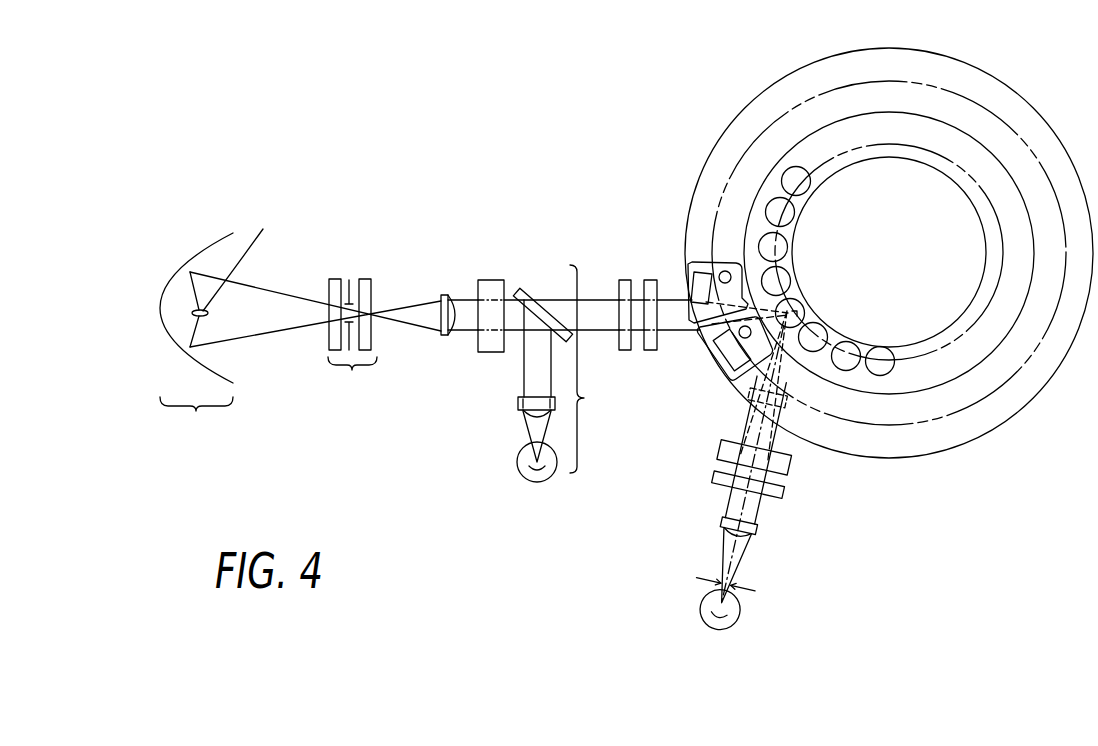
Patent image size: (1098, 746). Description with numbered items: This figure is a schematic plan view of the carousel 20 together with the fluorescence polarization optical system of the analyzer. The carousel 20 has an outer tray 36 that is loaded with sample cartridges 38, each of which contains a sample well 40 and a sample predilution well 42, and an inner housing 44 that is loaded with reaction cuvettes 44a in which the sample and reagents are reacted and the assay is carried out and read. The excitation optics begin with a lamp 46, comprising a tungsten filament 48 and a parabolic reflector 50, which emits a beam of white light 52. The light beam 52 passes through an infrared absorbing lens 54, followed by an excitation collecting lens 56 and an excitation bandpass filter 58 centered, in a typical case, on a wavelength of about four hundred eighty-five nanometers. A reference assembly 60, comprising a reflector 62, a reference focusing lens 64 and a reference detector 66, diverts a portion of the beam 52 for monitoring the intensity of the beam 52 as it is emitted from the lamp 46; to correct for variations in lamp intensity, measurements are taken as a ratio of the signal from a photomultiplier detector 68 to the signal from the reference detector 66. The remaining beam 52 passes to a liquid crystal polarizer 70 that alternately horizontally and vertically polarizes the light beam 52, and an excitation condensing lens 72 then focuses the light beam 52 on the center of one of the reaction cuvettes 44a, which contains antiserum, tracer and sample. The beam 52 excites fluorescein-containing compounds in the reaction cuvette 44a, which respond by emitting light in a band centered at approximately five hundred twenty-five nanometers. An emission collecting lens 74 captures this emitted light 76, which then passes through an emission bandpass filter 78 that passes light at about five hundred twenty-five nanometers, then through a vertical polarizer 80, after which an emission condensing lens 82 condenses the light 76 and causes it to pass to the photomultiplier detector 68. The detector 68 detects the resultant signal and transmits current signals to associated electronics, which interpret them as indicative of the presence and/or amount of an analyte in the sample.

The carousel 20 is at (896, 460).
The outer tray 36 is at (895, 415).
The sample cartridge 38 is at (688, 276).
The sample well 40 is at (700, 266).
The sample predilution well 42 is at (697, 288).
The inner housing 44 is at (892, 135).
The reaction cuvette 44a is at (810, 176).
The lamp 46 is at (196, 417).
The tungsten filament 48 is at (266, 226).
The parabolic reflector 50 is at (161, 307).
The light beam 52 is at (272, 334).
The infrared absorbing lens 54 is at (352, 346).
The excitation collecting lens 56 is at (445, 336).
The excitation bandpass filter 58 is at (493, 352).
The reference assembly 60 is at (593, 369).
The reflector 62 is at (522, 291).
The reference focusing lens 64 is at (518, 404).
The reference detector 66 is at (545, 482).
The photomultiplier detector 68 is at (740, 620).
The liquid crystal polarizer 70 is at (626, 350).
The excitation condensing lens 72 is at (652, 350).
The emission collecting lens 74 is at (792, 405).
The emitted light 76 is at (797, 380).
The emission bandpass filter 78 is at (797, 466).
The vertical polarizer 80 is at (788, 496).
The emission condensing lens 82 is at (762, 532).